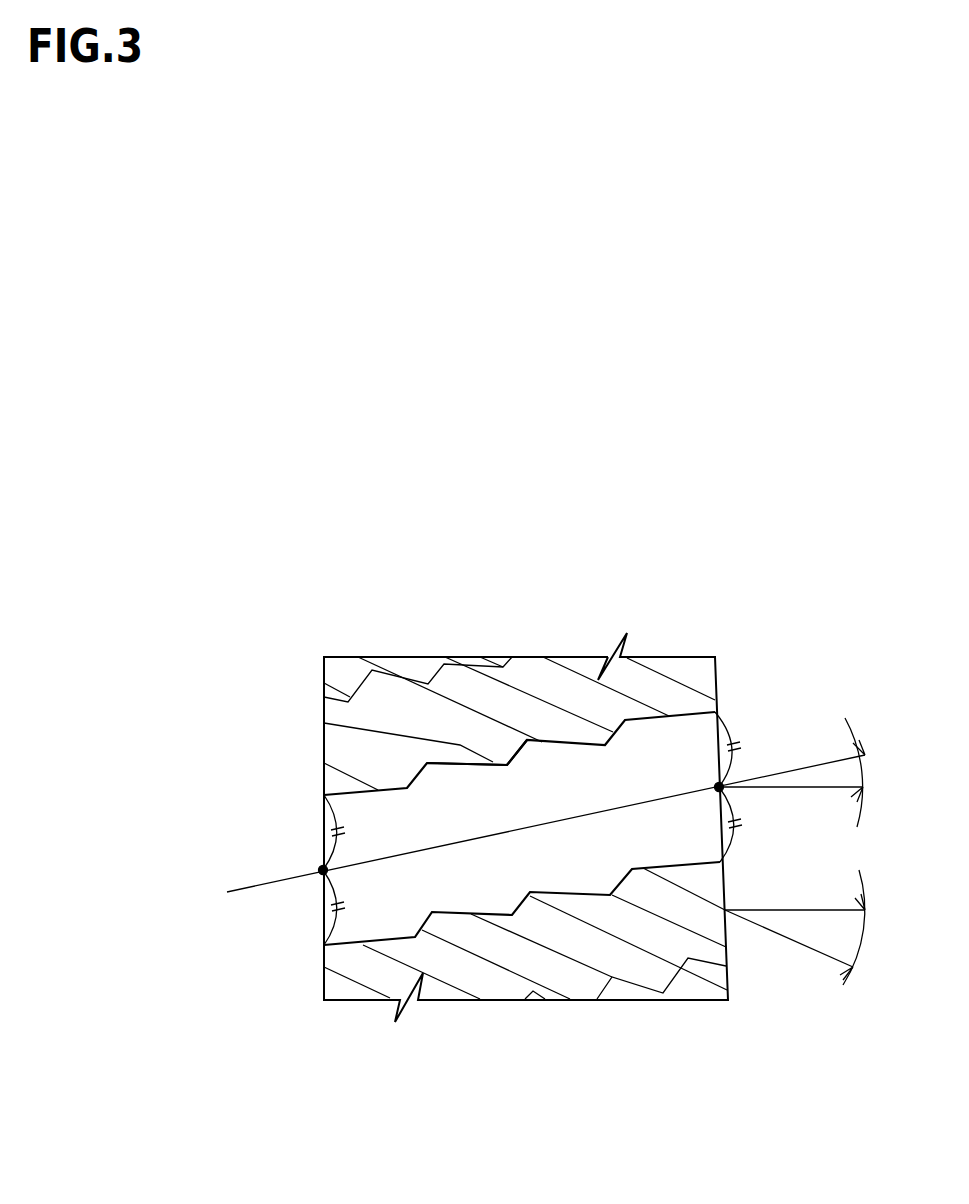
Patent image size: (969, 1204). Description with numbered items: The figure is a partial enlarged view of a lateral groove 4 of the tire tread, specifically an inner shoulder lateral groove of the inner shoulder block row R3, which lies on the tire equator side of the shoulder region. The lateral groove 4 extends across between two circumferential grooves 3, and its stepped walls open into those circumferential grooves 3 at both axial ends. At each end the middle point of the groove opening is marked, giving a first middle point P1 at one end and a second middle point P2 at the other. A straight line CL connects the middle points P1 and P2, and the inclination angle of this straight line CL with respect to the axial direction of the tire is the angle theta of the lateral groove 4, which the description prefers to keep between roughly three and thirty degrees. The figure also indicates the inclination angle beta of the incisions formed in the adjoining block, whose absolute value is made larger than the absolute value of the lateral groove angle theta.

The circumferential groove 3 is at (302, 665).
The inner shoulder block row R3 is at (540, 625).
The lateral groove 4 is at (441, 802).
The straight line CL is at (258, 887).
The middle point P1 is at (323, 870).
The middle point P2 is at (721, 786).